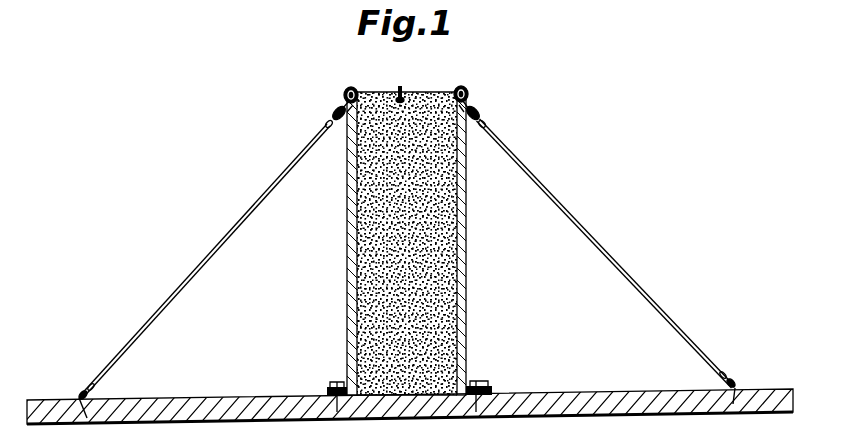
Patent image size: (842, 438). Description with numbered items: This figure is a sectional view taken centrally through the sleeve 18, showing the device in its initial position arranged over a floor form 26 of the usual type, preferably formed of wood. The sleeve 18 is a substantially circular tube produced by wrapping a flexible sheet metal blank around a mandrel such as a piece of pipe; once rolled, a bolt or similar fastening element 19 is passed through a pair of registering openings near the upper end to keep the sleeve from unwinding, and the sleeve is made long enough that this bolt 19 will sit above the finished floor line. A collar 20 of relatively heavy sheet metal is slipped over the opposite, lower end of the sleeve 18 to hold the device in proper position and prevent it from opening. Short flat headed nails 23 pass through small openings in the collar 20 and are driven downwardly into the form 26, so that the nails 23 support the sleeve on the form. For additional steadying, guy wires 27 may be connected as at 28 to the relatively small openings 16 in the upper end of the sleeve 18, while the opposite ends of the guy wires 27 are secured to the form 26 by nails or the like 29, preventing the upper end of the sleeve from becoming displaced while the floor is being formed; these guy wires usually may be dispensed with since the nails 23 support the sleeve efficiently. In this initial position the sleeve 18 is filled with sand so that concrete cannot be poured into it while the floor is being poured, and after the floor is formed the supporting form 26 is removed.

The relatively small openings 16 is at (412, 100).
The sleeve 18 is at (468, 308).
The bolt 19 is at (333, 128).
The collar 20 is at (326, 392).
The nails 23 is at (334, 385).
The floor form 26 is at (591, 393).
The guy wires 27 is at (180, 285).
The connection 28 is at (342, 98).
The nails 29 is at (72, 398).